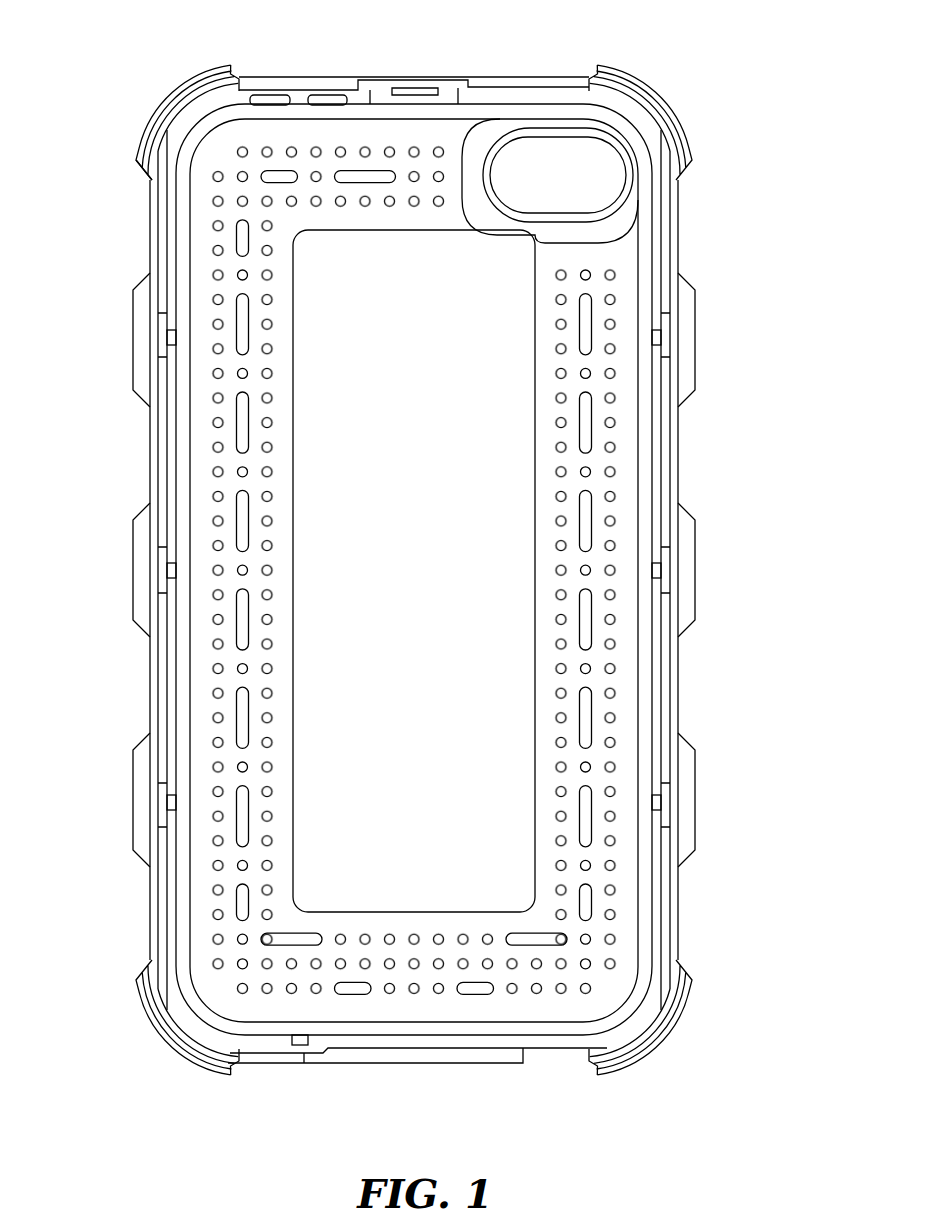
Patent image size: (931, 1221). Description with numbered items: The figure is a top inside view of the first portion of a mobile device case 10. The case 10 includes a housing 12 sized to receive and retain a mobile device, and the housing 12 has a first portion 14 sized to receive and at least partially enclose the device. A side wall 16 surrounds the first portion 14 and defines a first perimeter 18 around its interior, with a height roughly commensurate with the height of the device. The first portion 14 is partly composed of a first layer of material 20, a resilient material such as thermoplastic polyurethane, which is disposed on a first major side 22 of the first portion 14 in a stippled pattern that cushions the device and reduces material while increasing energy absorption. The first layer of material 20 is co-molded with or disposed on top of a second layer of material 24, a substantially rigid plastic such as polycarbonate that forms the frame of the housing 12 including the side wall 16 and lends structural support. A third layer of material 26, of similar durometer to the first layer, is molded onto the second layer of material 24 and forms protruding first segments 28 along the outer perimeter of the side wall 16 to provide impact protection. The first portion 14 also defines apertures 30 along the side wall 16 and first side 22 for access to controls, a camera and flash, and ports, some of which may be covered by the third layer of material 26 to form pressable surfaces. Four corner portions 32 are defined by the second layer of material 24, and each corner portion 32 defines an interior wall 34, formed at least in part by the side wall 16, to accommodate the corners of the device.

The mobile device case 10 is at (170, 1092).
The housing 12 is at (693, 1088).
The first portion 14 is at (673, 98).
The side wall 16 is at (678, 453).
The first perimeter 18 is at (677, 912).
The first layer of material 20 is at (588, 713).
The first major side 22 is at (205, 140).
The second layer of material 24 is at (322, 712).
The third layer of material 26 is at (695, 320).
The first segments 28 is at (695, 366).
The apertures 30 is at (548, 177).
The corner portions 32 is at (158, 90).
The interior wall 34 is at (152, 182).